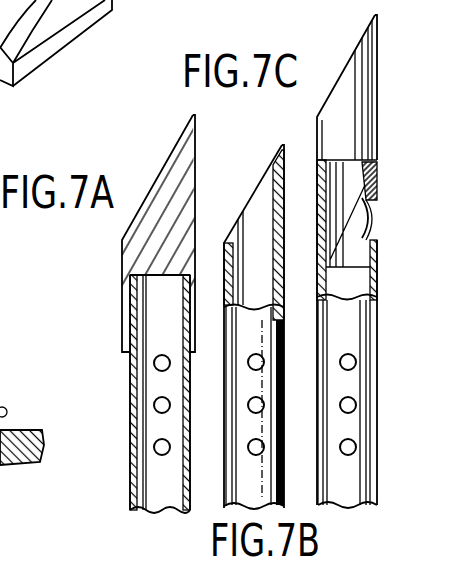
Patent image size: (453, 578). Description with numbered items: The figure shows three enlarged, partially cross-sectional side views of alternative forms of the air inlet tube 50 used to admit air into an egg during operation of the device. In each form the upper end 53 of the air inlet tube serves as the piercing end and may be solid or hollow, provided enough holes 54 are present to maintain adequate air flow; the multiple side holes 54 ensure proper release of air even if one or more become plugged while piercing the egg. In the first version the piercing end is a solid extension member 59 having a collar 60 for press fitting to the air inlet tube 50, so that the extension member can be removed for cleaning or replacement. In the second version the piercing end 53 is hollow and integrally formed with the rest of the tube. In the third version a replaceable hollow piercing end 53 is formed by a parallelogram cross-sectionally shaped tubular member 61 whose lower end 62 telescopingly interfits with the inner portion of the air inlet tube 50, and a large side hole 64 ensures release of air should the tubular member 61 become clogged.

In FIG. 7A, the air inlet tube 50 is at (134, 424).
In FIG. 7B, the air inlet tube 50 is at (284, 412).
In FIG. 7C, the air inlet tube 50 is at (380, 370).
In FIG. 7A, the upper end 53 is at (163, 167).
In FIG. 7B, the upper end 53 is at (265, 173).
In FIG. 7C, the upper end 53 is at (347, 64).
In FIG. 7A, the holes 54 is at (170, 365).
In FIG. 7B, the holes 54 is at (256, 404).
In FIG. 7C, the holes 54 is at (357, 406).
In FIG. 7A, the solid extension member 59 is at (196, 152).
In FIG. 7A, the collar 60 is at (130, 300).
In FIG. 7C, the tubular member 61 is at (357, 68).
In FIG. 7C, the lower end 62 is at (355, 186).
In FIG. 7C, the large side hole 64 is at (370, 220).